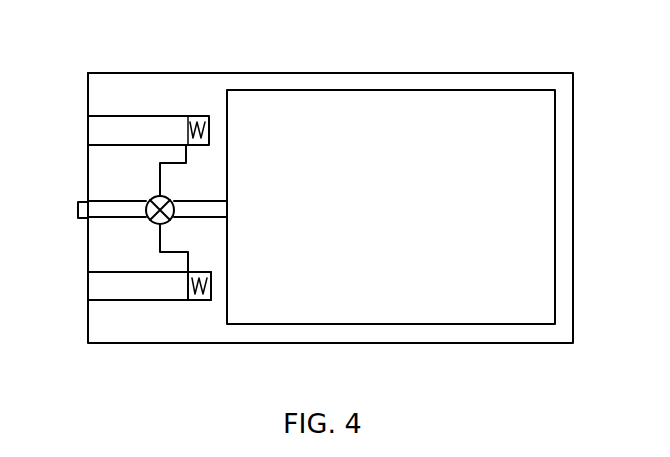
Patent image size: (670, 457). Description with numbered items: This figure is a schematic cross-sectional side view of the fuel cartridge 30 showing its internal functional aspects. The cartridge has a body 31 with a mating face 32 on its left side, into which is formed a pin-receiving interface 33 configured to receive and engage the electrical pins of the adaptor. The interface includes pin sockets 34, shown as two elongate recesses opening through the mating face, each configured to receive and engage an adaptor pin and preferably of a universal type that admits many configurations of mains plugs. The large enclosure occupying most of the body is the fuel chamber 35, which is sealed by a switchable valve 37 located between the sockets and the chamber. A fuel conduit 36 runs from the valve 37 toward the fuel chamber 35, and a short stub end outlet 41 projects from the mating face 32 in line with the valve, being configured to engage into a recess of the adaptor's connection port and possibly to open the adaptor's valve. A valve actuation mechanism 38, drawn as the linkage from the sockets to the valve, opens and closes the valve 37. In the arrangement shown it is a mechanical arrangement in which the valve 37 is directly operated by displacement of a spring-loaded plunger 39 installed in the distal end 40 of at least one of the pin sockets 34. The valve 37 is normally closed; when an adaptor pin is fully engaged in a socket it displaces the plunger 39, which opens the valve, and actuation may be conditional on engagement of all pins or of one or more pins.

The fuel cartridge 30 is at (488, 46).
The body 31 is at (573, 272).
The mating face 32 is at (88, 98).
The pin-receiving interface 33 is at (88, 282).
The pin sockets 34 is at (100, 131).
The fuel chamber 35 is at (464, 297).
The fuel conduit 36 is at (207, 207).
The switchable valve 37 is at (175, 218).
The valve actuation mechanism 38 is at (160, 166).
The spring-loaded plunger 39 is at (197, 300).
The distal end 40 is at (211, 291).
The stub end outlet 41 is at (78, 210).